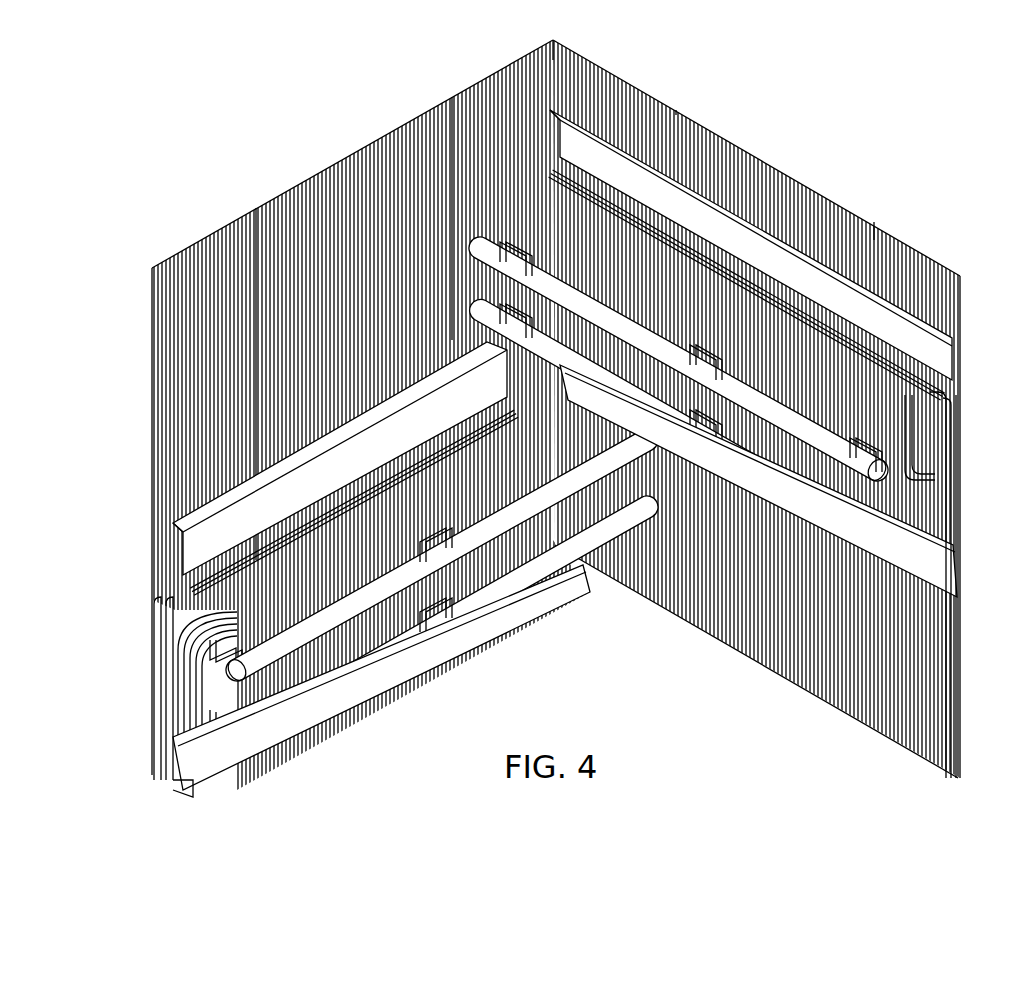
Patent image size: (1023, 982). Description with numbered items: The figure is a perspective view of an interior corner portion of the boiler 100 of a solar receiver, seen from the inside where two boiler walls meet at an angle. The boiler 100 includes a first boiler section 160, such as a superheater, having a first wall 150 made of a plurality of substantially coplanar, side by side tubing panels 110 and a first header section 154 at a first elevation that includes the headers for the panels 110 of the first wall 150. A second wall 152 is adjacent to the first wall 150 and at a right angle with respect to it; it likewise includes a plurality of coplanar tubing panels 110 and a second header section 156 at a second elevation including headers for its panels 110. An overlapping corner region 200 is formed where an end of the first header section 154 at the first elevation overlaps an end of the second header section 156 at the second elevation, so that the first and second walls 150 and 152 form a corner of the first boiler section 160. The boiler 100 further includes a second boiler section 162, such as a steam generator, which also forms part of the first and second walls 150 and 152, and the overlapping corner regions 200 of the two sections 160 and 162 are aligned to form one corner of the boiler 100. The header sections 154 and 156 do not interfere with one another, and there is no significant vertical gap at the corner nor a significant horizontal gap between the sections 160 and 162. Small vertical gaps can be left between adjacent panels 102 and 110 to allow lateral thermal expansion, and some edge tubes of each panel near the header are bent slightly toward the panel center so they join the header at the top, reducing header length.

The boiler 100 is at (552, 662).
The first boiler panel 102 is at (667, 624).
The second boiler panel 110 is at (258, 204).
The first wall 150 is at (300, 96).
The second wall 152 is at (812, 98).
The first header section 154 is at (385, 628).
The second header section 156 is at (928, 473).
The first boiler section 160 is at (444, 259).
The second boiler section 162 is at (130, 590).
The overlapping corner region 200 is at (584, 431).